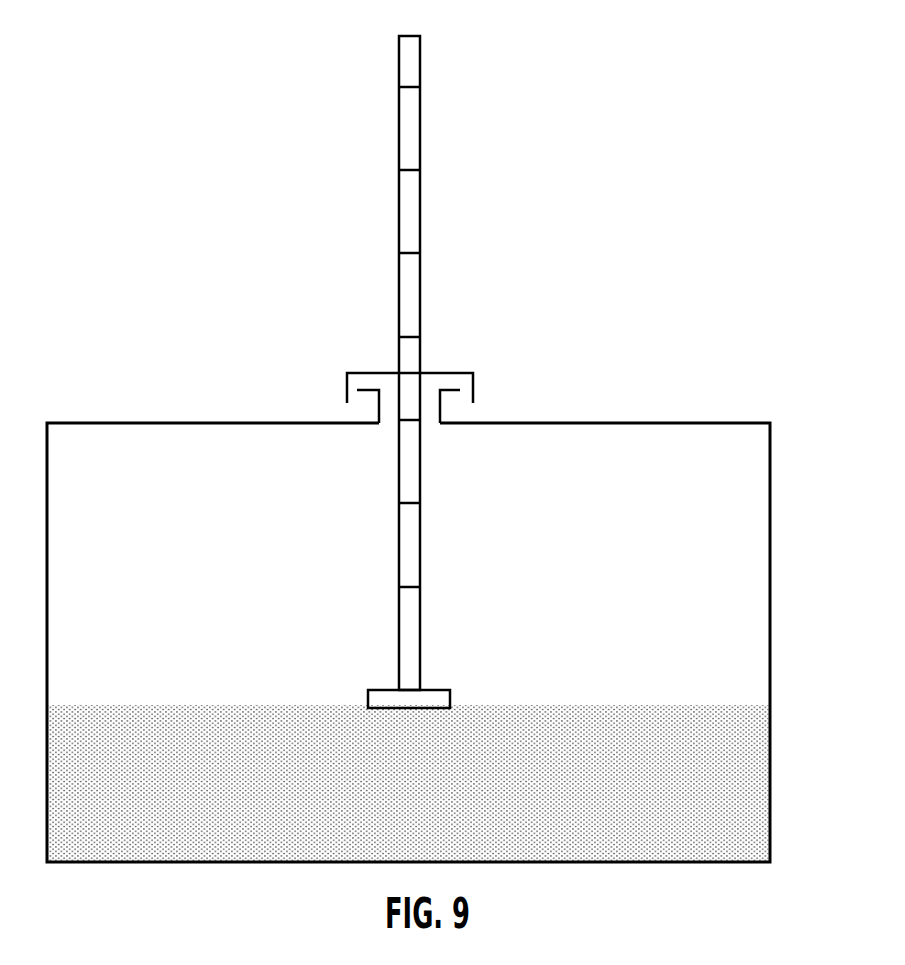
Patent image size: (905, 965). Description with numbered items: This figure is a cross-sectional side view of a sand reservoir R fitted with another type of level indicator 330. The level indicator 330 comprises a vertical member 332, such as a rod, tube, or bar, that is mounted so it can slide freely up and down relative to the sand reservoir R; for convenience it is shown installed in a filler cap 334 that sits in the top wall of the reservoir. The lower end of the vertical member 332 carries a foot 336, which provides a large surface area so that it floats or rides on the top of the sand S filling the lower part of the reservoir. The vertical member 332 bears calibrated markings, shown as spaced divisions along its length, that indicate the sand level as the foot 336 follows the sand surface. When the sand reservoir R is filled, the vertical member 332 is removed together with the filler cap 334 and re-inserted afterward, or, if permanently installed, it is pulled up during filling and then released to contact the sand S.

The level indicator 330 is at (361, 372).
The vertical member 332 is at (410, 569).
The filler cap 334 is at (437, 372).
The foot 336 is at (428, 700).
The sand reservoir R is at (738, 392).
The sand S is at (664, 784).